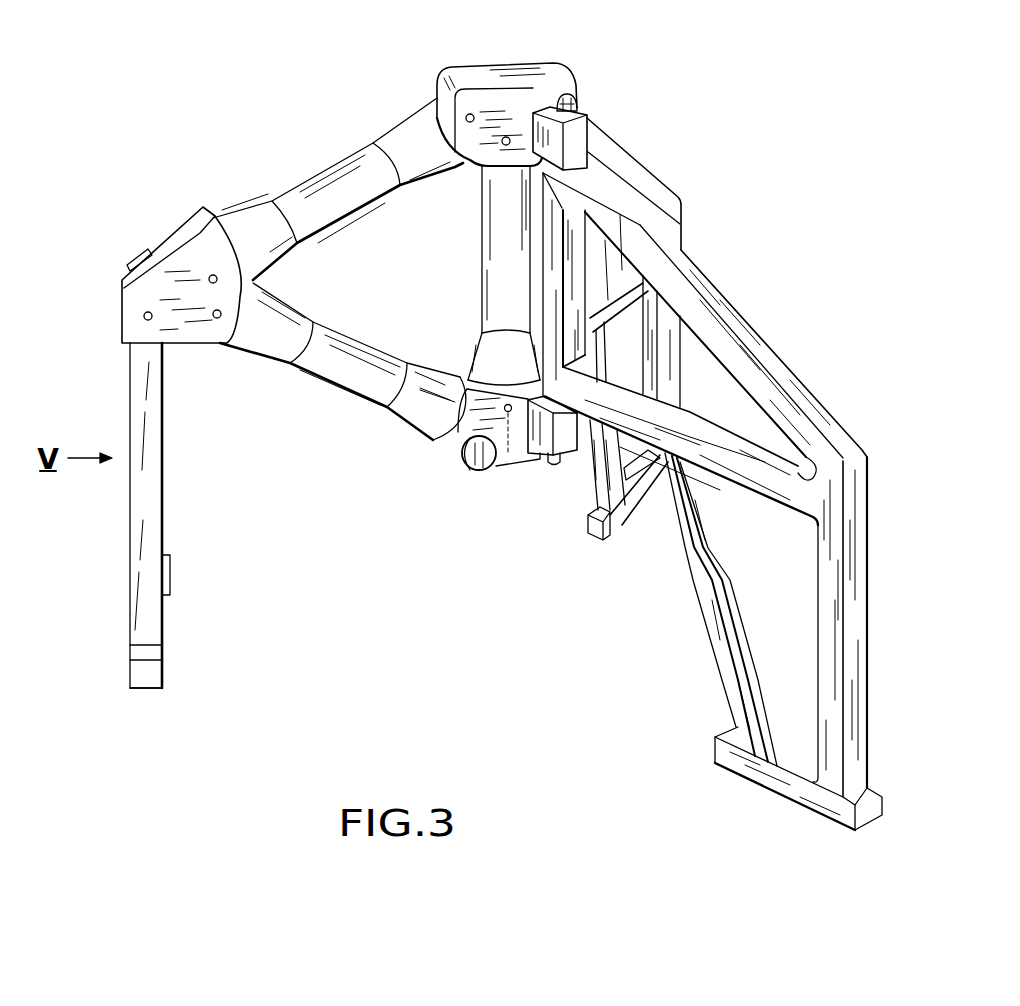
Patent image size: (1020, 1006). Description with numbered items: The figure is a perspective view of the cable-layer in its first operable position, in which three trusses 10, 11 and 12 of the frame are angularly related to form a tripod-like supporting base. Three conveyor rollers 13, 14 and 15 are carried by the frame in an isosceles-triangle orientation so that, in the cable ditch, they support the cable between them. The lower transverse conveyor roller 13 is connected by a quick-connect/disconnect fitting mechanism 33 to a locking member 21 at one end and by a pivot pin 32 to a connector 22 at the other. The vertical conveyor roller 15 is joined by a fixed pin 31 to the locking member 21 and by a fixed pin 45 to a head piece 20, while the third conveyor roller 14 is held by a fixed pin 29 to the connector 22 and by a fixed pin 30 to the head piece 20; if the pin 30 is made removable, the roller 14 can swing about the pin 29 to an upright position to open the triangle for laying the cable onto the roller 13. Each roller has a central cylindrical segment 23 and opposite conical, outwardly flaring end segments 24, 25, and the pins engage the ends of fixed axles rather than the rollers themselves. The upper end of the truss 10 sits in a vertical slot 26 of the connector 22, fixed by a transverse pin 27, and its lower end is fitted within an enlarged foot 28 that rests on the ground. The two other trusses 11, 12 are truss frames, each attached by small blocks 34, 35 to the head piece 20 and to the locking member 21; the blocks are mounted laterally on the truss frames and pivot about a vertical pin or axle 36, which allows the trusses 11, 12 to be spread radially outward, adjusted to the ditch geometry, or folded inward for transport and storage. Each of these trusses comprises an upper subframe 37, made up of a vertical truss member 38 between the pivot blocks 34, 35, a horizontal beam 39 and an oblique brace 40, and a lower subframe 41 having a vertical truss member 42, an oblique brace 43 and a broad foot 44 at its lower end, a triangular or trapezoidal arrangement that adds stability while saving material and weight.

The truss 10 is at (142, 519).
The truss 11 is at (696, 232).
The truss 12 is at (878, 596).
The lower transverse conveyor roller 13 is at (344, 408).
The conveyor roller 14 is at (311, 160).
The vertical conveyor roller 15 is at (470, 274).
The head piece 20 is at (516, 103).
The locking member 21 is at (521, 458).
The connector 22 is at (178, 265).
The central cylindrical segment 23 is at (363, 355).
The conical outwardly flaring end portion 24 is at (281, 322).
The conical outwardly flaring end portion 25 is at (434, 390).
The vertical slot 26 is at (137, 253).
The transverse pin 27 is at (143, 318).
The enlarged foot 28 is at (152, 674).
The fixed pin 29 is at (215, 278).
The fixed pin 30 is at (469, 116).
The fixed pin 31 is at (507, 462).
The pivot pin 32 is at (218, 320).
The quick-connect/disconnect fitting mechanism 33 is at (462, 480).
The small block 34 is at (578, 141).
The small block 35 is at (576, 453).
The vertical axis, pin or axle 36 is at (580, 105).
The upper subframe 37 is at (785, 344).
The vertical truss member 38 is at (578, 258).
The horizontal beam 39 is at (712, 430).
The oblique brace 40 is at (826, 420).
The lower subframe 41 is at (695, 677).
The vertical truss member 42 is at (857, 700).
The oblique brace 43 is at (724, 593).
The broad foot 44 is at (788, 798).
The fixed pin 45 is at (506, 144).